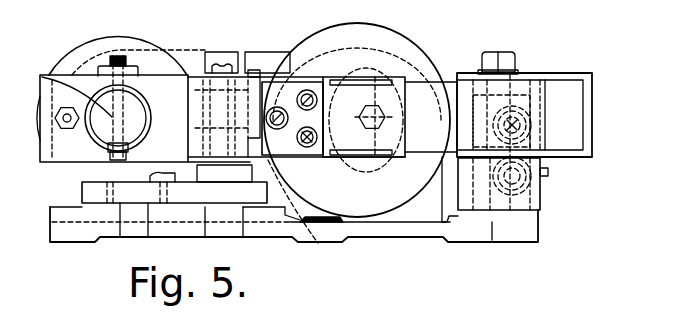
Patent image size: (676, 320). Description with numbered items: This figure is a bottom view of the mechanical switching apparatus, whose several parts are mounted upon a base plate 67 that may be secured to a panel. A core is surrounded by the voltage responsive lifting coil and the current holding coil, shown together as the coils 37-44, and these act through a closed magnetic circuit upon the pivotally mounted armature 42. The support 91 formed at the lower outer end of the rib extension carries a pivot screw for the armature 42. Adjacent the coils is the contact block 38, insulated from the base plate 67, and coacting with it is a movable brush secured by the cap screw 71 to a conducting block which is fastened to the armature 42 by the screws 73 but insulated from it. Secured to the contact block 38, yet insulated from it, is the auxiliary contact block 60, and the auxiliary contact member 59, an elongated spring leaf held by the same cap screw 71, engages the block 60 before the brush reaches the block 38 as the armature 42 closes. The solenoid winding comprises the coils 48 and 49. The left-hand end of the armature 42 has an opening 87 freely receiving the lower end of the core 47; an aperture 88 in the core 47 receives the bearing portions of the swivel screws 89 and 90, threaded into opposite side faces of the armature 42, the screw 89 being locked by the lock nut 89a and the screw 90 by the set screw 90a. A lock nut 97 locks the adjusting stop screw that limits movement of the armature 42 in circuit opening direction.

The current holding coil and voltage responsive lifting coil 37-44 is at (412, 31).
The contact block 38 is at (525, 77).
The armature 42 is at (121, 99).
The core 47 is at (118, 118).
The coil 48 is at (171, 51).
The coil 49 is at (242, 90).
The auxiliary contact member 59 is at (575, 127).
The auxiliary contact block 60 is at (570, 75).
The base plate 67 is at (387, 233).
The cap screw 71 is at (358, 118).
The screws 73 is at (297, 101).
The opening 87 is at (135, 95).
The aperture 88 is at (52, 76).
The swivel screw 89 is at (118, 54).
The lock nut 89a is at (104, 70).
The swivel screw 90 is at (112, 143).
The set screw 90a is at (137, 147).
The pivot screw support 91 is at (229, 56).
The lock nut 97 is at (70, 131).